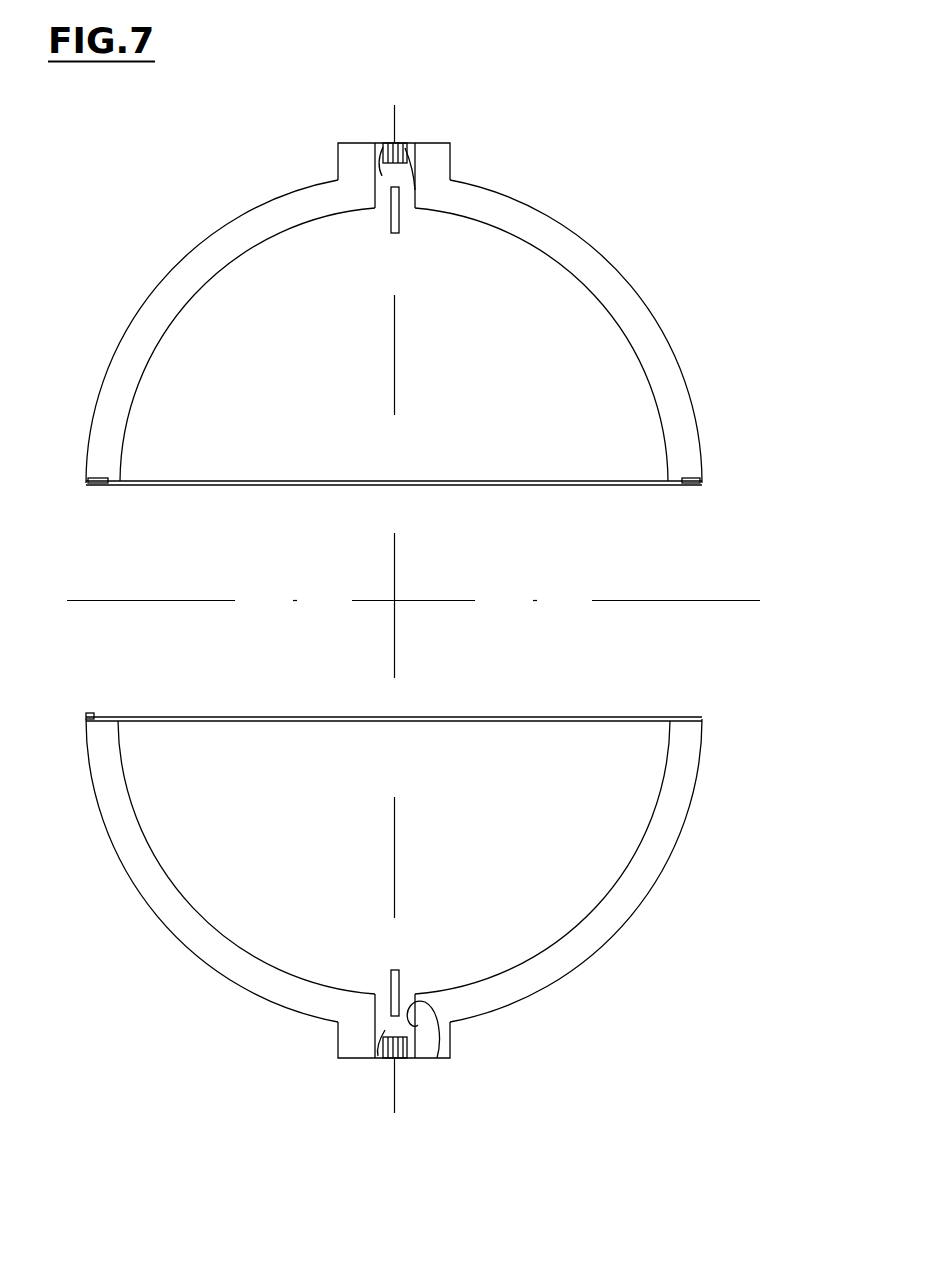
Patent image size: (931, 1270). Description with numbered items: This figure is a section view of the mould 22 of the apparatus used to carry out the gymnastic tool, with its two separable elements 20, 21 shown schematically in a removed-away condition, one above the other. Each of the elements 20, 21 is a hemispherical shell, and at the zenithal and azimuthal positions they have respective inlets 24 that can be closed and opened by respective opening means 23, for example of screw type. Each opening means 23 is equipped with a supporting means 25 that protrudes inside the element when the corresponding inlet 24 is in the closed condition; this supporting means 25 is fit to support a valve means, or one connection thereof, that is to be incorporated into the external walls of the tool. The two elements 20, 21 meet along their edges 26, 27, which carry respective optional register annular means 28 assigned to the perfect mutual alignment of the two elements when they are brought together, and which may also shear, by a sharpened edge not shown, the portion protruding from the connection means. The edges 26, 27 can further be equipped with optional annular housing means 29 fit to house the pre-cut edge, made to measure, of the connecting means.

The element 20 is at (152, 887).
The element 21 is at (165, 298).
The mould 22 is at (660, 140).
The opening means 23 is at (383, 143).
The inlet 24 is at (407, 143).
The supporting means 25 is at (393, 213).
The edge 26 is at (700, 697).
The edge 27 is at (700, 497).
The register annular means 28 is at (88, 488).
The annular housing means 29 is at (117, 718).